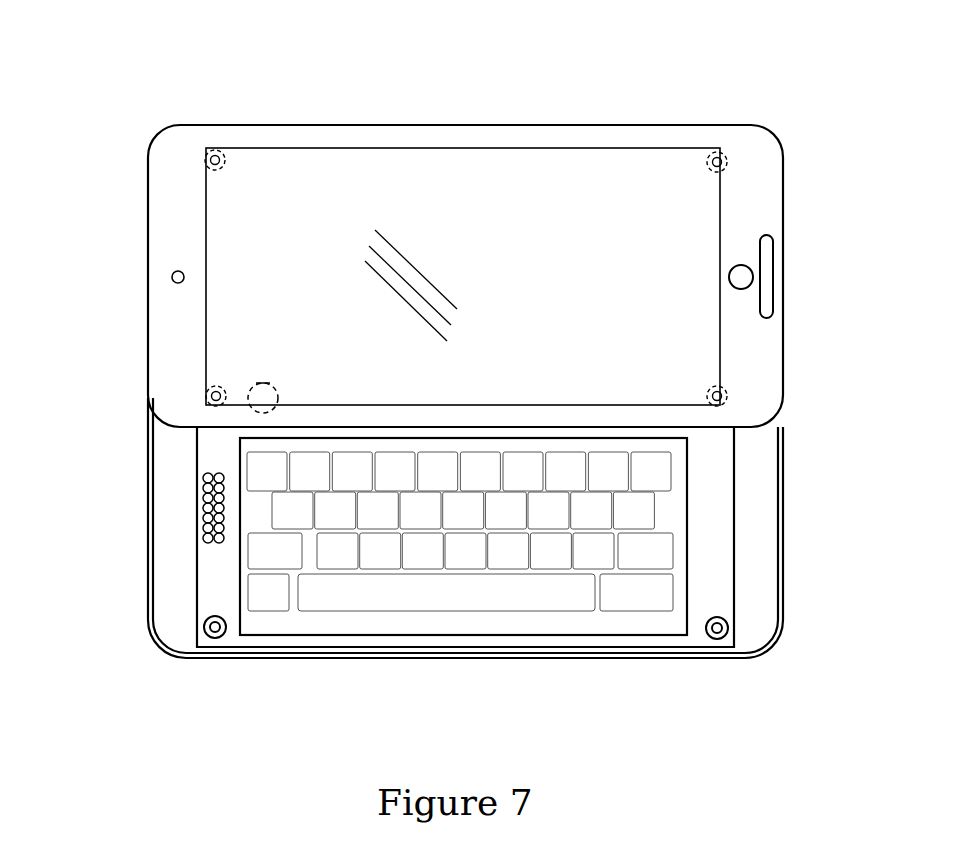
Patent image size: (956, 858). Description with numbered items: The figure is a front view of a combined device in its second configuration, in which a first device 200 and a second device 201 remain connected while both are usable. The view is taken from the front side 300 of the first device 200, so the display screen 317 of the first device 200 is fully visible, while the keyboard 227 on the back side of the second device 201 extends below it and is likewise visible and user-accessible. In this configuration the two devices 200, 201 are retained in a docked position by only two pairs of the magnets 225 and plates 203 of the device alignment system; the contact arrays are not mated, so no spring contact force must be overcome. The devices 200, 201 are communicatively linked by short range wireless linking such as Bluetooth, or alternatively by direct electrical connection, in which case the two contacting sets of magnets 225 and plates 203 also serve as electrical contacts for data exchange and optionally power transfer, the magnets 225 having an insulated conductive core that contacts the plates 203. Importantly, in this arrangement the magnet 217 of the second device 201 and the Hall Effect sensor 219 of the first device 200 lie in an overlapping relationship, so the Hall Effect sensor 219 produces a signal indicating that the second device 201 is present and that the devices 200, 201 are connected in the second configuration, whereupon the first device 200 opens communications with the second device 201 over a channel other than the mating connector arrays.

The first device 200 is at (120, 277).
The second device 201 is at (120, 517).
The plates 203 is at (207, 162).
The magnet 217 is at (262, 386).
The Hall Effect sensor 219 is at (277, 393).
The magnets 225 is at (204, 628).
The keyboard 227 is at (573, 593).
The front side 300 is at (770, 165).
The display screen 317 is at (530, 157).